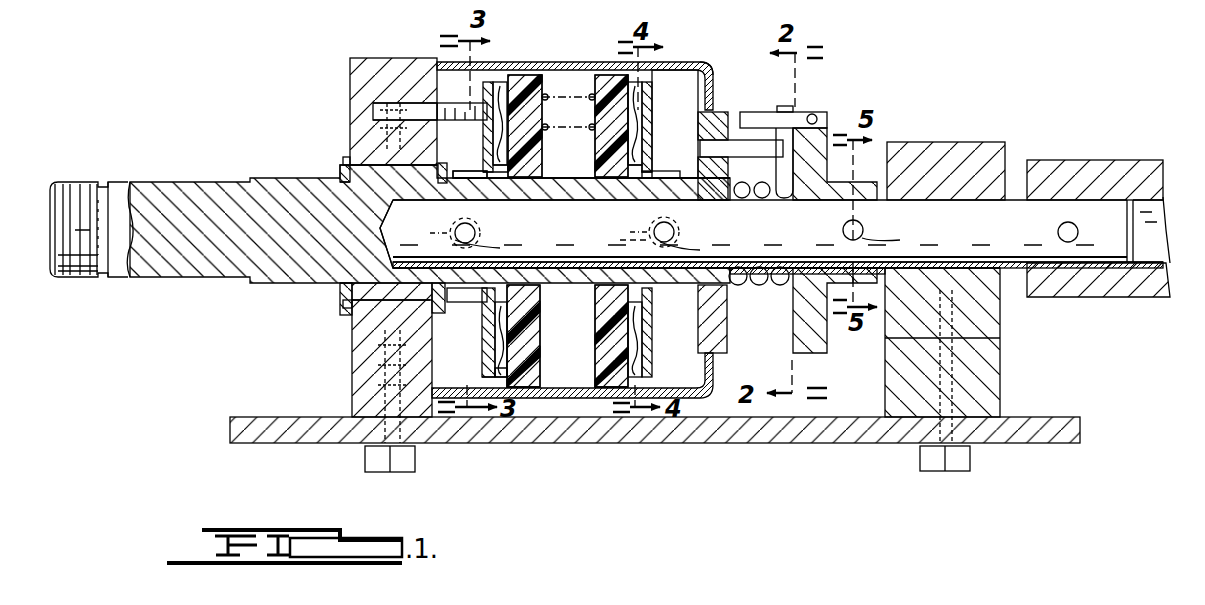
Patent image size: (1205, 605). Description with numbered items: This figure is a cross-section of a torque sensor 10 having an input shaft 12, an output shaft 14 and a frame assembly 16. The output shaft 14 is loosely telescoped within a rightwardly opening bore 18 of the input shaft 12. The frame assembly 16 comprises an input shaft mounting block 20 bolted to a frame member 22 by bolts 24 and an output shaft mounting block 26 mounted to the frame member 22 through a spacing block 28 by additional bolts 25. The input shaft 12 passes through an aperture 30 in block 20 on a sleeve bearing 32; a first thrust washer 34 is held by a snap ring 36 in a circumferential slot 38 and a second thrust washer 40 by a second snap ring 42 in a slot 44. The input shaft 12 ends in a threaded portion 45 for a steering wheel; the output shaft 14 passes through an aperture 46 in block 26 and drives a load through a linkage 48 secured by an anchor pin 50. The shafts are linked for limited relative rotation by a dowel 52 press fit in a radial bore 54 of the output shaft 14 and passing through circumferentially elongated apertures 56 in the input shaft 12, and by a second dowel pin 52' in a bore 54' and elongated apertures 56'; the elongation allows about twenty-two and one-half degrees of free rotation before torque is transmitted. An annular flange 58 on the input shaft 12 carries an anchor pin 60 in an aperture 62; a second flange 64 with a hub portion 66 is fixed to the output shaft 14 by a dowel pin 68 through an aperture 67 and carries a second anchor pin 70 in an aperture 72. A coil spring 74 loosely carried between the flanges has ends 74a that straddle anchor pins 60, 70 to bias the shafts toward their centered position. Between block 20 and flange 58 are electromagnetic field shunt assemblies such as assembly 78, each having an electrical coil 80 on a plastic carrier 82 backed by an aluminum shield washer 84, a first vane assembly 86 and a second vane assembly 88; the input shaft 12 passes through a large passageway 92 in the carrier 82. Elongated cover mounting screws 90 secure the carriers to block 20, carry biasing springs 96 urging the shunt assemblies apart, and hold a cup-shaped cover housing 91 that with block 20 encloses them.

The torque sensor 10 is at (872, 58).
The input shaft 12 is at (185, 190).
The output shaft 14 is at (1011, 234).
The frame or housing assembly 16 is at (530, 58).
The bore 18 is at (418, 247).
The input shaft mounting block 20 is at (372, 58).
The frame member 22 is at (770, 437).
The bolts 24 is at (415, 466).
The additional bolts 25 is at (970, 466).
The output shaft mounting block 26 is at (985, 142).
The intermediate spacing block 28 is at (1010, 386).
The aperture 30 is at (380, 310).
The intermediate sleeve bearing 32 is at (362, 298).
The first thrust washer 34 is at (343, 305).
The snap ring 36 is at (343, 298).
The circumferential slot 38 is at (340, 287).
The second thrust washer 40 is at (415, 156).
The second snap ring 42 is at (447, 174).
The circumferential slot 44 is at (458, 182).
The threaded portion 45 is at (68, 185).
The aperture 46 is at (942, 268).
The interconnecting linkage 48 is at (1076, 160).
The anchor pin or dowel 50 is at (1072, 229).
The dowel 52 is at (500, 247).
The second dowel pin 52' is at (700, 248).
The radial bore 54 is at (487, 226).
The bore 54' is at (690, 225).
The registering apertures 56 is at (402, 234).
The registering apertures 56' is at (621, 222).
The annular flange 58 is at (727, 333).
The anchor pin 60 is at (738, 150).
The aperture 62 is at (752, 178).
The second annular flange 64 is at (822, 356).
The hub portion 66 is at (868, 188).
The aperture 67 is at (897, 239).
The dowel pin 68 is at (862, 226).
The second anchor pin 70 is at (757, 112).
The aperture 72 is at (826, 112).
The coil spring 74 is at (742, 287).
The spring ends 74a is at (790, 106).
The electromagnetic field shunt assembly 78 is at (612, 57).
The electrical coil 80 is at (488, 320).
The plastic carrier 82 is at (530, 388).
The aluminum shield washer 84 is at (540, 345).
The first vane assembly 86 is at (490, 377).
The second vane assembly 88 is at (498, 352).
The cover mounting screws 90 is at (670, 108).
The cup-shaped cover housing 91 is at (696, 60).
The passageway 92 is at (540, 169).
The biasing springs 96 is at (558, 77).